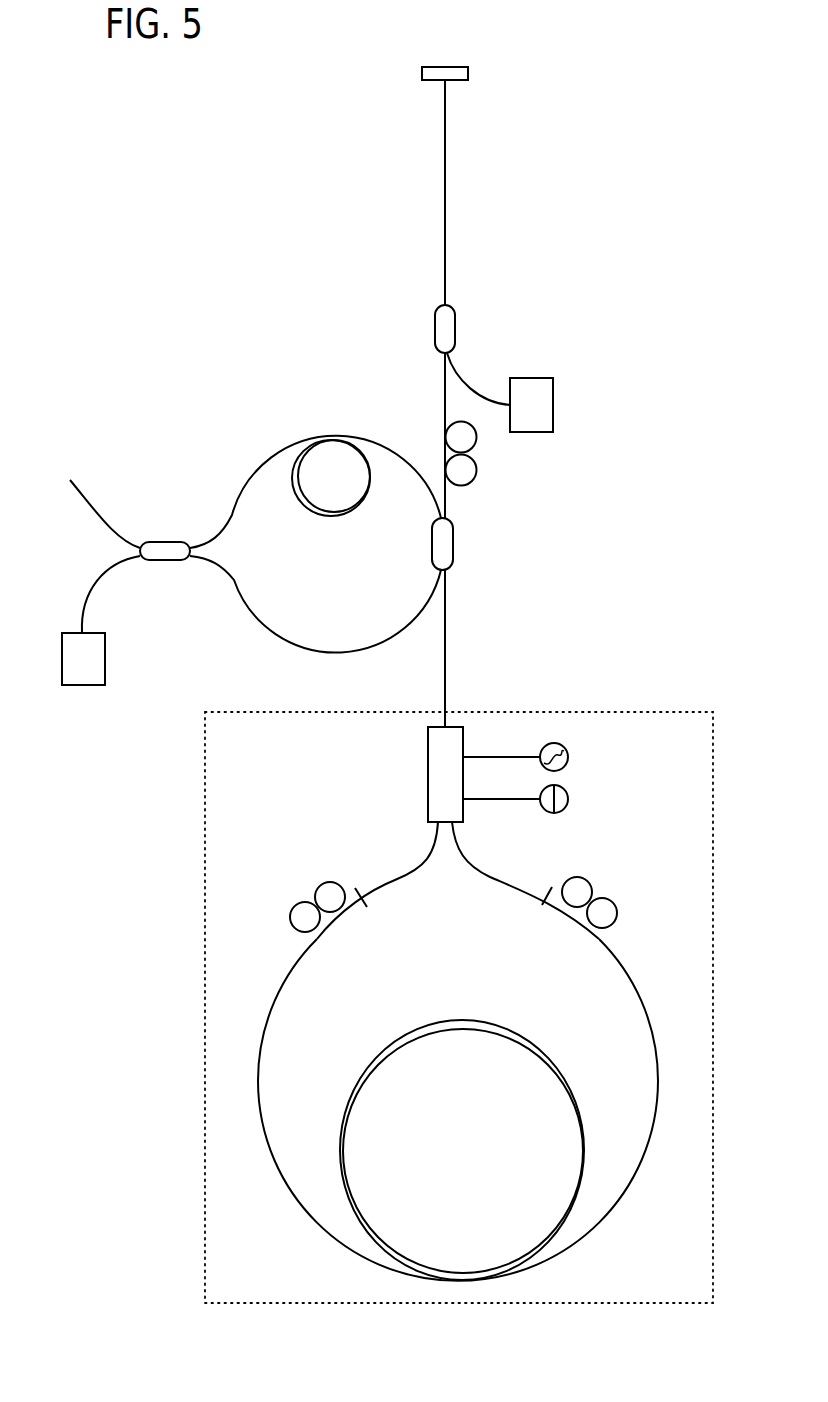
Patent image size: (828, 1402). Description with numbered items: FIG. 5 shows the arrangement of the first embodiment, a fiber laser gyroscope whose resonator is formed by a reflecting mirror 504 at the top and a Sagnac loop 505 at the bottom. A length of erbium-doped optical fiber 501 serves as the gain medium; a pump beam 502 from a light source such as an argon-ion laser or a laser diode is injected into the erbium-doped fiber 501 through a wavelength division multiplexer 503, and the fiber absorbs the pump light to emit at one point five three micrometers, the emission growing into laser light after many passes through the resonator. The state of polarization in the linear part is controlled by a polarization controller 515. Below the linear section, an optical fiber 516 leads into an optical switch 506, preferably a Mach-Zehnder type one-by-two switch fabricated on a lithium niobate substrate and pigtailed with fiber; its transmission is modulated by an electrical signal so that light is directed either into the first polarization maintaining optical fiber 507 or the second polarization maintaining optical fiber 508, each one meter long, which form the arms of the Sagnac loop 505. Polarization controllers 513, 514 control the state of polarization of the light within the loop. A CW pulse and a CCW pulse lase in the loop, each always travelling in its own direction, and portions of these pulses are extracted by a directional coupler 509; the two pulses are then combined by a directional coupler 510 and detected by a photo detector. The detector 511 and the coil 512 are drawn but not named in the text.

The erbium-doped optical fiber 501 is at (446, 200).
The pump beam 502 is at (530, 378).
The wavelength division multiplexer 503 is at (435, 328).
The reflecting mirror 504 is at (422, 78).
The Sagnac loop 505 is at (658, 710).
The optical switch 506 is at (428, 755).
The first polarization maintaining optical fiber 507 is at (497, 875).
The second polarization maintaining optical fiber 508 is at (375, 885).
The directional coupler 509 is at (455, 548).
The directional coupler 510 is at (162, 562).
The detector 511 is at (80, 685).
The fiber coil 512 is at (330, 440).
The polarization controller 513 is at (605, 886).
The polarization controller 514 is at (314, 886).
The polarization controller 515 is at (477, 470).
The optical fiber 516 is at (446, 672).